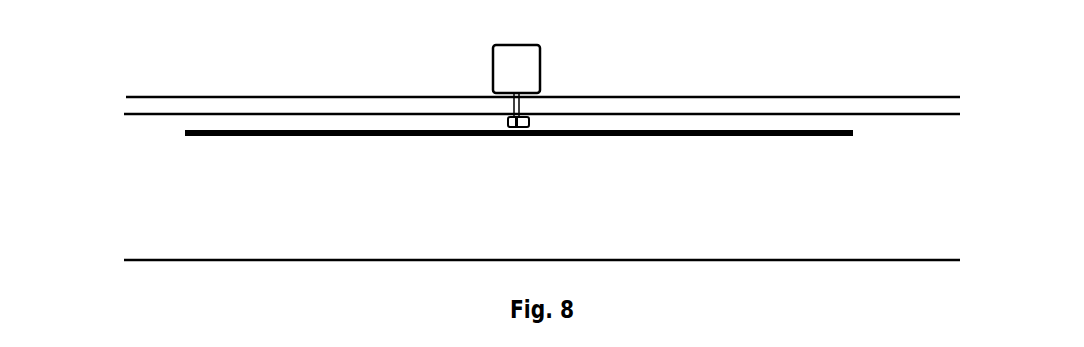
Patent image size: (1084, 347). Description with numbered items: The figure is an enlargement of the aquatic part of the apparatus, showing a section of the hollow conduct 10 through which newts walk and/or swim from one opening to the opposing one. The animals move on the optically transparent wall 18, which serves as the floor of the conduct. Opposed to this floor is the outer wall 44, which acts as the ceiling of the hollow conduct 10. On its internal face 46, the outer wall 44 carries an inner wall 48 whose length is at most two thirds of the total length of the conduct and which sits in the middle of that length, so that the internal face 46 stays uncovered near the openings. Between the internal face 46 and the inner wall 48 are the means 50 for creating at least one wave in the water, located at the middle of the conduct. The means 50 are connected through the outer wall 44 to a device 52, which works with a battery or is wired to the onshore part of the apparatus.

The hollow conduct 10 is at (364, 198).
The optically transparent wall 18 is at (531, 260).
The outer wall 44 is at (124, 104).
The internal face 46 is at (877, 116).
The inner wall 48 is at (671, 136).
The means for creating at least one wave 50 is at (530, 122).
The device 52 is at (520, 72).